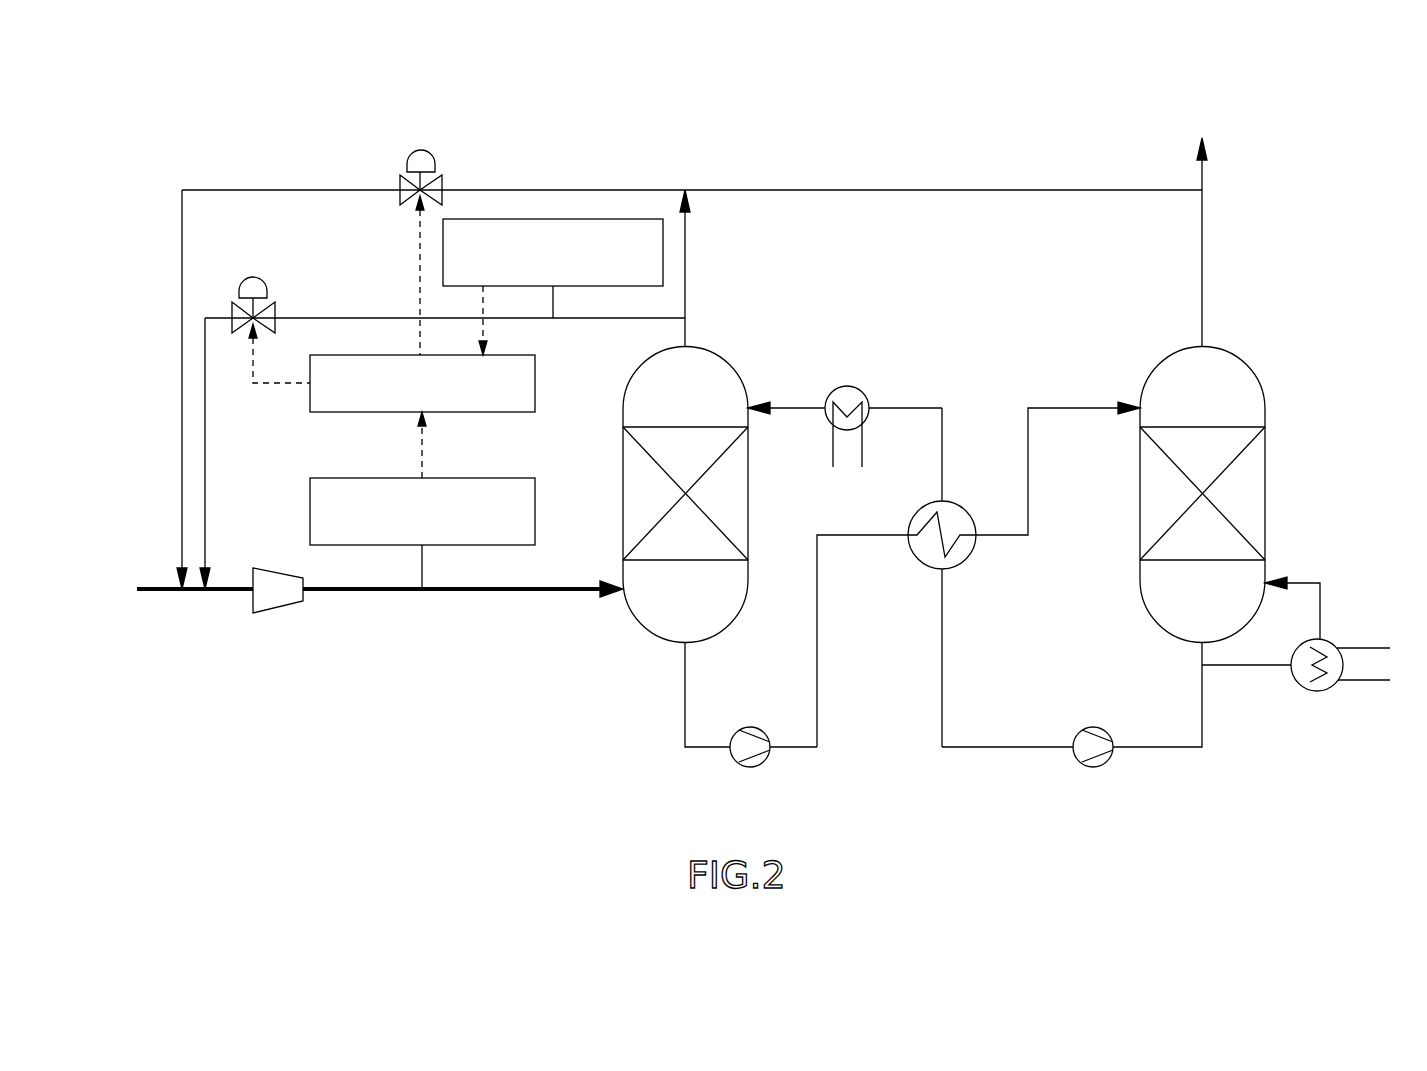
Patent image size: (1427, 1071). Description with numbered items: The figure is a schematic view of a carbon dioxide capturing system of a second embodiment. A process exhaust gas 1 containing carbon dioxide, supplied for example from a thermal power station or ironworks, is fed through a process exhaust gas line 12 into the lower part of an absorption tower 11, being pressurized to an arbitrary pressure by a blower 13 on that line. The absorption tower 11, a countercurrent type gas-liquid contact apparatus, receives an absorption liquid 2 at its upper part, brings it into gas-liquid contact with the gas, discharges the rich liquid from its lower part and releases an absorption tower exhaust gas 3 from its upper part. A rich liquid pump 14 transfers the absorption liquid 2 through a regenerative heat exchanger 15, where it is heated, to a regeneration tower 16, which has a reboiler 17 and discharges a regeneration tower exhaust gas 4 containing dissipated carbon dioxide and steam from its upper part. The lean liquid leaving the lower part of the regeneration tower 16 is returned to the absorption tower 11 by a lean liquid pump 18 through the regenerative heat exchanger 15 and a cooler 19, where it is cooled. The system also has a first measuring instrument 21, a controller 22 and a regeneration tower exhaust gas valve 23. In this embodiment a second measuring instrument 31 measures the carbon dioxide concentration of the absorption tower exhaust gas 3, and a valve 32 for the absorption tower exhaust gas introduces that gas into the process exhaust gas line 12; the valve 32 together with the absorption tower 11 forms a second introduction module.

The process exhaust gas 1 is at (162, 592).
The absorption liquid 2 is at (788, 408).
The absorption tower exhaust gas 3 is at (687, 298).
The regeneration tower exhaust gas 4 is at (1202, 308).
The absorption tower 11 is at (748, 500).
The process exhaust gas line 12 is at (572, 592).
The blower 13 is at (305, 597).
The rich liquid pump 14 is at (750, 767).
The regenerative heat exchanger 15 is at (965, 503).
The regeneration tower 16 is at (1265, 410).
The reboiler 17 is at (1333, 635).
The lean liquid pump 18 is at (1093, 767).
The cooler 19 is at (852, 385).
The measuring instrument 21 is at (535, 500).
The controller 22 is at (535, 384).
The regeneration tower exhaust gas valve 23 is at (440, 162).
The measuring instrument 31 is at (632, 219).
The valve for absorption tower exhaust gas 32 is at (248, 277).